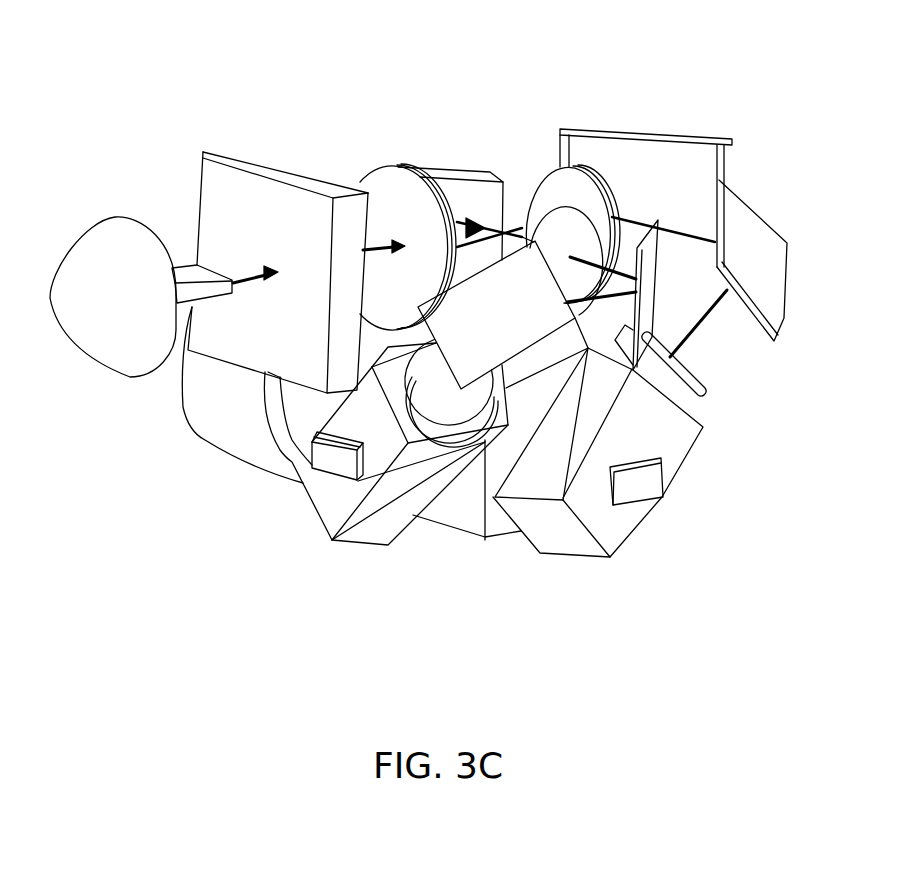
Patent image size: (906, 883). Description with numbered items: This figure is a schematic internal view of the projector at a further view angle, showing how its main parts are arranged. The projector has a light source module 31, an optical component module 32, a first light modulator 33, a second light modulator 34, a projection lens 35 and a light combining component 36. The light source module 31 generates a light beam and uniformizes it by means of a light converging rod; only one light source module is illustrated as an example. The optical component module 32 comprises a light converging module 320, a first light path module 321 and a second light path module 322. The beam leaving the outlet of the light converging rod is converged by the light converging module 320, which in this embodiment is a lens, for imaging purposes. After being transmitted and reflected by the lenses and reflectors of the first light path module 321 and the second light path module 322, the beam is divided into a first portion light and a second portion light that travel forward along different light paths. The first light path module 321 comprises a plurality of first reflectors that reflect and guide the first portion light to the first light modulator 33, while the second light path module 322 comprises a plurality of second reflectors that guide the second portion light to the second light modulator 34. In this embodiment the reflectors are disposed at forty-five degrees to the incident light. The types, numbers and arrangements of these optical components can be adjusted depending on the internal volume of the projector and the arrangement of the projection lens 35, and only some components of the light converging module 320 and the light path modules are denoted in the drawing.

The light source module 31 is at (223, 136).
The optical component module 32 is at (700, 65).
The light converging module 320 is at (392, 181).
The second light path module 322 is at (470, 167).
The first light path module 321 is at (568, 132).
The first light modulator 33 is at (653, 483).
The second light modulator 34 is at (312, 470).
The projection lens 35 is at (187, 407).
The light combining component 36 is at (512, 536).